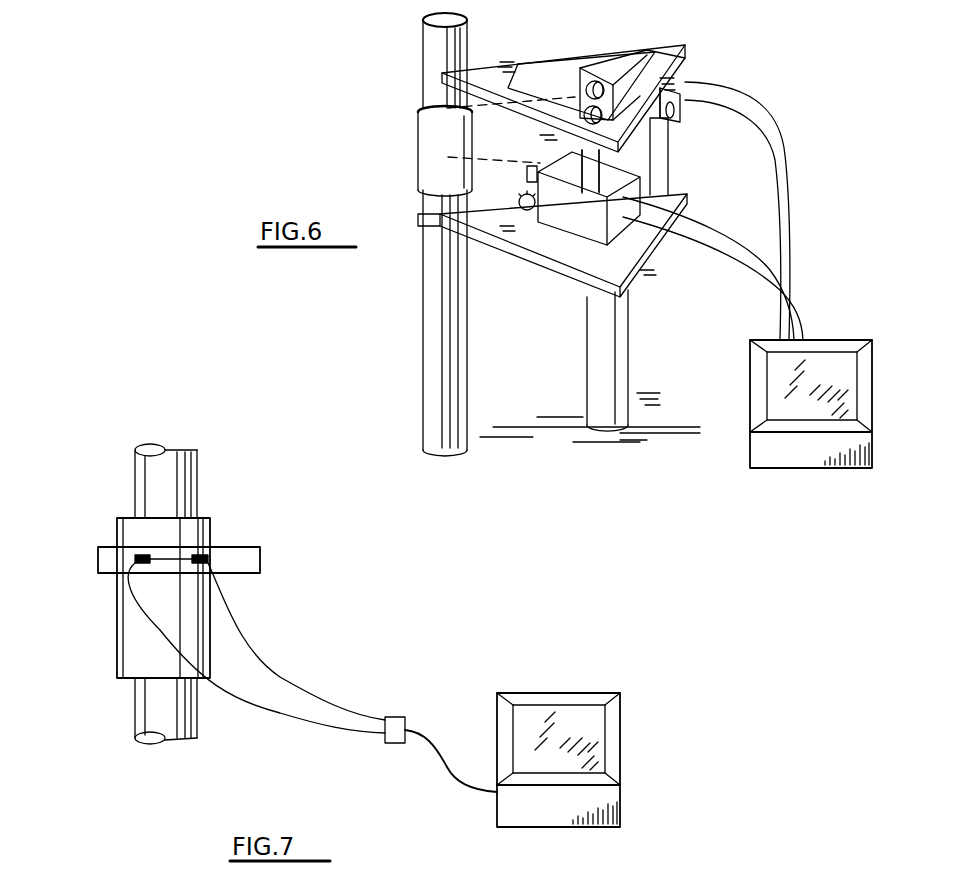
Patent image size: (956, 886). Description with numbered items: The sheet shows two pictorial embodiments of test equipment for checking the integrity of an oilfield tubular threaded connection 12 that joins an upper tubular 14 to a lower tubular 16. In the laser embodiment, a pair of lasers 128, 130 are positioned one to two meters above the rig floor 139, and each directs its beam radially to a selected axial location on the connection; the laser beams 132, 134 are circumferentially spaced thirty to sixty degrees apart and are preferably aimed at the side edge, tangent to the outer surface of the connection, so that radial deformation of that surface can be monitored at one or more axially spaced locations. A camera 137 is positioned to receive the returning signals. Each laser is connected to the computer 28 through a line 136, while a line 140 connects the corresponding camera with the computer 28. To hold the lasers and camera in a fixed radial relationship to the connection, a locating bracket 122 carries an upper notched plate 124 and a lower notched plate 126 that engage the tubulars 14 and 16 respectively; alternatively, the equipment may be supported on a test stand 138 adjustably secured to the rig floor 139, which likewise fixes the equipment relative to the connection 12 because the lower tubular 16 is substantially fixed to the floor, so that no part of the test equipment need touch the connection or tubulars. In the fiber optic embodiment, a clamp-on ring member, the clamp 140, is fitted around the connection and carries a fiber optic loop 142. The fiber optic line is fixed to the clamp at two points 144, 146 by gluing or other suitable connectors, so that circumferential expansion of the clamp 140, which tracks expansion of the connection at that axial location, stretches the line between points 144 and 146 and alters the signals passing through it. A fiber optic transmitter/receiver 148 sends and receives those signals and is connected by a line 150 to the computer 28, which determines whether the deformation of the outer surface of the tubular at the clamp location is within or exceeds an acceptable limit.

In FIG. 6, the connection 12 is at (428, 128).
In FIG. 7, the connection 12 is at (135, 650).
In FIG. 6, the tubular 14 is at (445, 48).
In FIG. 7, the tubular 14 is at (165, 483).
In FIG. 6, the lower tubular 16 is at (437, 378).
In FIG. 7, the lower tubular 16 is at (138, 703).
In FIG. 6, the computer 28 is at (832, 338).
In FIG. 7, the computer 28 is at (537, 693).
In FIG. 6, the locating bracket 122 is at (587, 257).
In FIG. 6, the upper notched plate 124 is at (500, 62).
In FIG. 6, the lower notched plate 126 is at (418, 232).
In FIG. 6, the laser 128 is at (567, 192).
In FIG. 6, the laser 130 is at (690, 48).
In FIG. 6, the laser beam 132 is at (445, 155).
In FIG. 6, the laser beam 134 is at (563, 97).
In FIG. 6, the line 136 is at (770, 127).
In FIG. 6, the camera 137 is at (675, 118).
In FIG. 6, the test stand 138 is at (608, 355).
In FIG. 6, the rig floor 139 is at (553, 437).
In FIG. 6, the clamp 140 is at (780, 162).
In FIG. 7, the clamp 140 is at (247, 563).
In FIG. 7, the fiber optic loop 142 is at (298, 688).
In FIG. 7, the point 144 is at (138, 558).
In FIG. 7, the point 146 is at (200, 557).
In FIG. 7, the fiber optic transmitter/receiver 148 is at (390, 717).
In FIG. 7, the line 150 is at (445, 763).